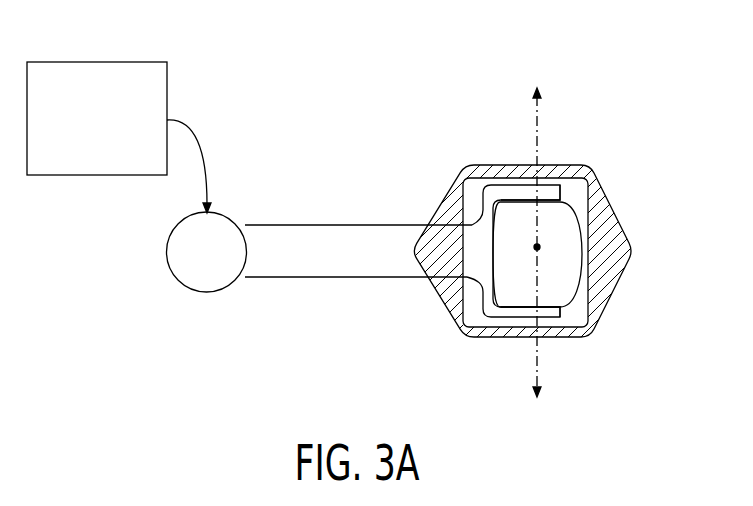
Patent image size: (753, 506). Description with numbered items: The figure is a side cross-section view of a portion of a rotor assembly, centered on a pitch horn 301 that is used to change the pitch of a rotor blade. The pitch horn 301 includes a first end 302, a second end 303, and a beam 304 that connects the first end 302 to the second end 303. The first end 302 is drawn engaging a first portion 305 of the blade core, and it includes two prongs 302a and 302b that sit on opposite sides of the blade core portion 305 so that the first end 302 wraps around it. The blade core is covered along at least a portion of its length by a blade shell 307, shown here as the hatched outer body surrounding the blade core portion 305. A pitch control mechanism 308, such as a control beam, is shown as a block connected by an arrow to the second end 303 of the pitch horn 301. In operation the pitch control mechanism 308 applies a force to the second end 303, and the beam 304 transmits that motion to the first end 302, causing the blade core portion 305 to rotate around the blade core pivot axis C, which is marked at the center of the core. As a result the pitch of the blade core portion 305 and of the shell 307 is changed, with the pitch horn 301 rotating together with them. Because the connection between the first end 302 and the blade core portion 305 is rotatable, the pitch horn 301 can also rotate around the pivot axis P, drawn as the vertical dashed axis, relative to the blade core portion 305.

The pitch horn 301 is at (327, 196).
The first end 302 is at (480, 197).
The prong 302a is at (547, 190).
The prong 302b is at (547, 312).
The second end 303 is at (197, 277).
The beam 304 is at (313, 262).
The first portion of blade core 305 is at (552, 215).
The blade shell 307 is at (612, 252).
The pitch control mechanism 308 is at (86, 62).
The pivot axis P is at (543, 113).
The blade core pivot axis C is at (543, 249).